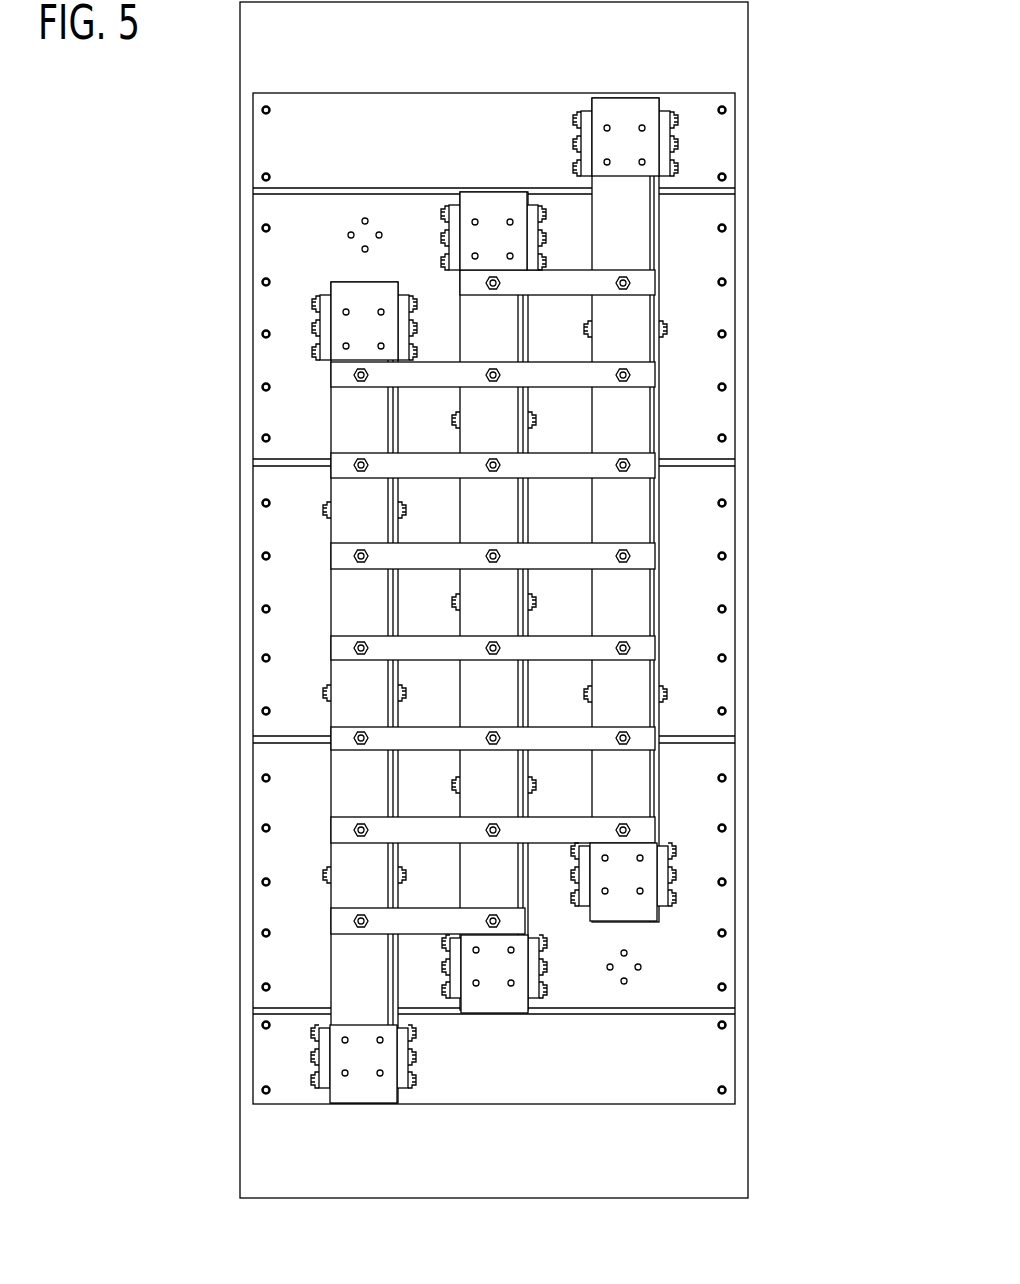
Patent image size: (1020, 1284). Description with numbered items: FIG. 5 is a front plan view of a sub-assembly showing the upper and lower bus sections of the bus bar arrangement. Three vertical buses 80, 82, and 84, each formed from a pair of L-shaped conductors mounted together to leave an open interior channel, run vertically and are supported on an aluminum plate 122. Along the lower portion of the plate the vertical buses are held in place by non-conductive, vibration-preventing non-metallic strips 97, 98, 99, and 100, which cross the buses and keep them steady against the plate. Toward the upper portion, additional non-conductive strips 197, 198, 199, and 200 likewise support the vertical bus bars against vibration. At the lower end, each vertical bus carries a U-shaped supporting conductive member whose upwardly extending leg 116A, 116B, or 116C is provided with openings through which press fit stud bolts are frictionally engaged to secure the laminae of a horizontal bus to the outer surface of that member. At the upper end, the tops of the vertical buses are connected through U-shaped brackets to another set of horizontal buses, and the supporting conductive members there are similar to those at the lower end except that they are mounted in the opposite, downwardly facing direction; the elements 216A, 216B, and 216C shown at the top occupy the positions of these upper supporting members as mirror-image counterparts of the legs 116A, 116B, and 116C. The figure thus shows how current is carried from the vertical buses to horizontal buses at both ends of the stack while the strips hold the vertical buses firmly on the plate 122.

The vertical bus 80 is at (446, 1083).
The vertical bus 82 is at (517, 1030).
The vertical bus 84 is at (620, 998).
The non-metallic strip 97 is at (643, 646).
The non-metallic strip 98 is at (640, 740).
The non-metallic strip 99 is at (646, 829).
The non-metallic strip 100 is at (342, 920).
The aluminum plate 122 is at (700, 585).
The non-conductive strip 197 is at (645, 558).
The non-conductive strip 198 is at (645, 465).
The non-conductive strip 199 is at (645, 372).
The non-conductive strip 200 is at (647, 285).
The upwardly extending leg 116A is at (348, 1088).
The upwardly extending leg 116B is at (481, 995).
The upwardly extending leg 116C is at (633, 909).
The upper bracket 216A is at (342, 288).
The upper bracket 216B is at (483, 203).
The upper bracket 216C is at (636, 108).